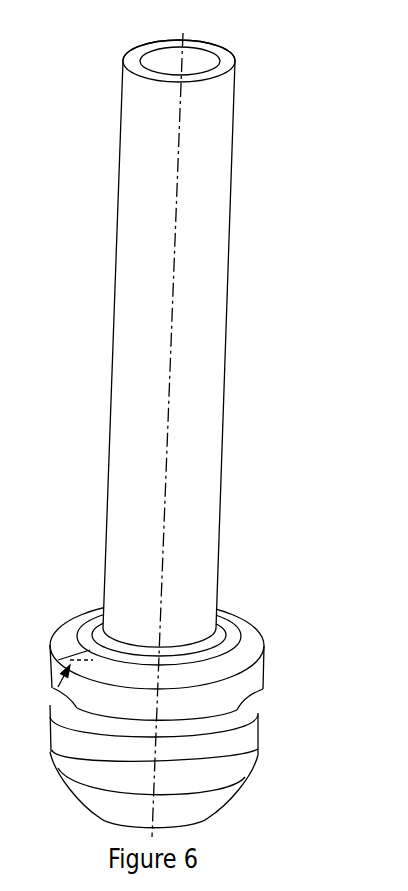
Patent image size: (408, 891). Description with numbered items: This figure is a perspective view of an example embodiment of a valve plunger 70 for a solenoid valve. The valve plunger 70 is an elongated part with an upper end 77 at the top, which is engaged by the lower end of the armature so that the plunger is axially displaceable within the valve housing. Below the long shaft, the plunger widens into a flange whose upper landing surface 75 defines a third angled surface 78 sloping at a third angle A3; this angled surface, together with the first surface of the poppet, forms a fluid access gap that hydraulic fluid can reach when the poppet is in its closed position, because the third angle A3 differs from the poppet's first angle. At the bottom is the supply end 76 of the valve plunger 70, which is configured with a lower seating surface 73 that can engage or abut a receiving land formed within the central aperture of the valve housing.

The valve plunger 70 is at (237, 48).
The upper end 77 is at (157, 101).
The upper landing surface 75 is at (247, 648).
The third angled surface 78 is at (215, 634).
The supply end 76 is at (243, 757).
The lower seating surface 73 is at (200, 808).
The third angle A3 is at (72, 646).